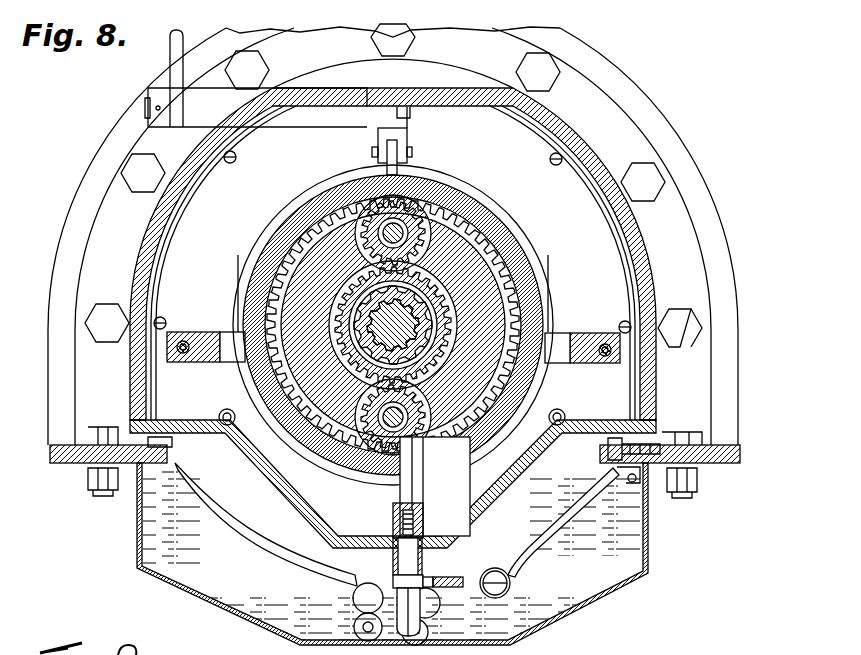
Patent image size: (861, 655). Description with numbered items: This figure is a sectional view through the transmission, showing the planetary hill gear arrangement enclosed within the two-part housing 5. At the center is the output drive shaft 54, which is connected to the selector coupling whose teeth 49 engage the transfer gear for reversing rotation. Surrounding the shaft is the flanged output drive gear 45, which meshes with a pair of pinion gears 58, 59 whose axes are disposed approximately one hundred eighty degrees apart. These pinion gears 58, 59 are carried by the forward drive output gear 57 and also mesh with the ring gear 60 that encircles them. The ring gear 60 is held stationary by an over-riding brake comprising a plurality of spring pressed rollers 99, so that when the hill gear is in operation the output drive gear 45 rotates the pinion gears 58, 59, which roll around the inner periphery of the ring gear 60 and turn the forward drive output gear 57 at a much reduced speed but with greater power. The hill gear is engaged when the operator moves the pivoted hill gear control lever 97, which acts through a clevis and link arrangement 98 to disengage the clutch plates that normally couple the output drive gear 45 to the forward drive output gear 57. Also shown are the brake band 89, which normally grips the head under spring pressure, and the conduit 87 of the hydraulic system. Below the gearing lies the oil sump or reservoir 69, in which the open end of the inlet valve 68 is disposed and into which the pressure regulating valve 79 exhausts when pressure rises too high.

The housing 5 is at (557, 118).
The hill gear control lever 97 is at (175, 50).
The clevis and link arrangement 98 is at (396, 152).
The pinion gear 58 is at (423, 213).
The pinion gear 59 is at (390, 468).
The spring pressed rollers 99 is at (302, 222).
The ring gear 60 is at (510, 240).
The forward drive output gear 57 is at (470, 272).
The output drive gear 45 is at (447, 310).
The output drive shaft 54 is at (405, 333).
The teeth 49 is at (425, 352).
The brake band 89 is at (240, 530).
The conduit 87 is at (622, 476).
The pressure regulating valve 79 is at (355, 618).
The inlet valve 68 is at (430, 628).
The oil sump or reservoir 69 is at (578, 610).